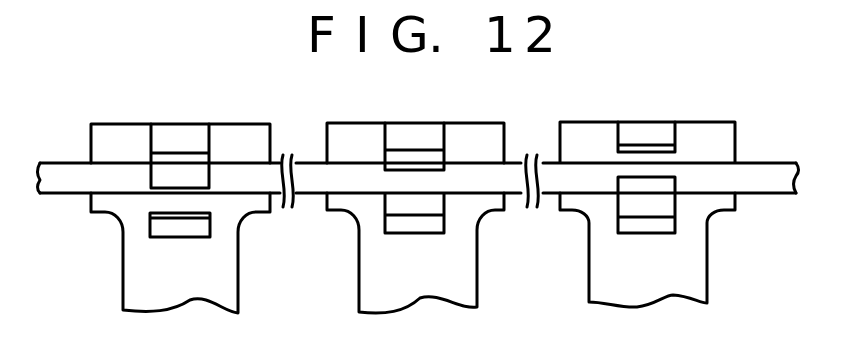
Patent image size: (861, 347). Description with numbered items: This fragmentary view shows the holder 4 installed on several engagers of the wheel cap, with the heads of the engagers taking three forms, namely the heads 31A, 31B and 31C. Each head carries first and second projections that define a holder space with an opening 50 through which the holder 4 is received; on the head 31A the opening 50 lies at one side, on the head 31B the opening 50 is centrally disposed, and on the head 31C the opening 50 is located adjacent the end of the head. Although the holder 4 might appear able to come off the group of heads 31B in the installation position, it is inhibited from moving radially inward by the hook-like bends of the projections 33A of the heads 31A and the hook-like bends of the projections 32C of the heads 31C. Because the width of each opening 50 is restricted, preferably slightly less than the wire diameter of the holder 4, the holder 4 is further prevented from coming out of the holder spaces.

The holder 4 is at (767, 173).
The head 31A is at (122, 124).
The head 31B is at (360, 123).
The head 31C is at (590, 120).
The second projection 33A is at (185, 163).
The first projection 32C is at (648, 200).
The opening 50 is at (172, 206).